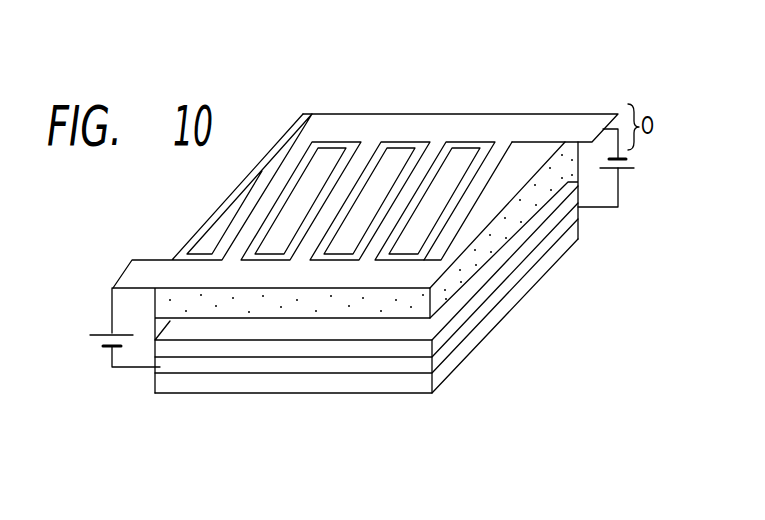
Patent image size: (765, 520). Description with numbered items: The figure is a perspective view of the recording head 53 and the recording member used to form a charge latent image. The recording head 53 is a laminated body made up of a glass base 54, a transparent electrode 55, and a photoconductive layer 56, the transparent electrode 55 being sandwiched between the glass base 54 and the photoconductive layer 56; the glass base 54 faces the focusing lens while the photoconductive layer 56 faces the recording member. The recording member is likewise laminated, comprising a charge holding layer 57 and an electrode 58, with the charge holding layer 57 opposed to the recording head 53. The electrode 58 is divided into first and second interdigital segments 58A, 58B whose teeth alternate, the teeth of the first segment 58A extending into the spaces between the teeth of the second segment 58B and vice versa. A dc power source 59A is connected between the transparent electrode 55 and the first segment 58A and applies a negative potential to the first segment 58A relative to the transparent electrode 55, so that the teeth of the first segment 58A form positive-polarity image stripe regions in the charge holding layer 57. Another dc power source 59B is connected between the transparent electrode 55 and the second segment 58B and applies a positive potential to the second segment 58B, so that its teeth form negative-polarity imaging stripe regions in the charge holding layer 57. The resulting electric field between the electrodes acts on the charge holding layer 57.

The recording head 53 is at (580, 292).
The glass base 54 is at (490, 310).
The transparent electrode 55 is at (498, 283).
The photoconductive layer 56 is at (505, 257).
The charge holding layer 57 is at (513, 215).
The electrode 58 is at (287, 276).
The first interdigital segment 58A is at (541, 126).
The second interdigital segment 58B is at (364, 274).
The dc power source 59A is at (631, 168).
The dc power source 59B is at (96, 333).